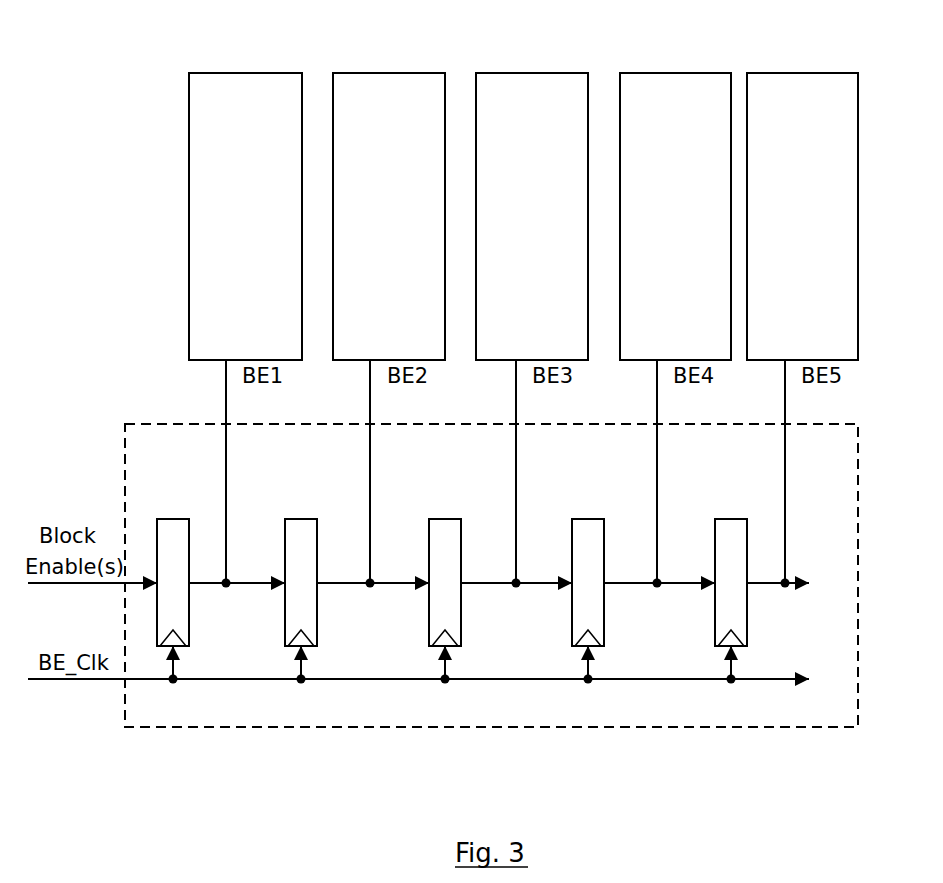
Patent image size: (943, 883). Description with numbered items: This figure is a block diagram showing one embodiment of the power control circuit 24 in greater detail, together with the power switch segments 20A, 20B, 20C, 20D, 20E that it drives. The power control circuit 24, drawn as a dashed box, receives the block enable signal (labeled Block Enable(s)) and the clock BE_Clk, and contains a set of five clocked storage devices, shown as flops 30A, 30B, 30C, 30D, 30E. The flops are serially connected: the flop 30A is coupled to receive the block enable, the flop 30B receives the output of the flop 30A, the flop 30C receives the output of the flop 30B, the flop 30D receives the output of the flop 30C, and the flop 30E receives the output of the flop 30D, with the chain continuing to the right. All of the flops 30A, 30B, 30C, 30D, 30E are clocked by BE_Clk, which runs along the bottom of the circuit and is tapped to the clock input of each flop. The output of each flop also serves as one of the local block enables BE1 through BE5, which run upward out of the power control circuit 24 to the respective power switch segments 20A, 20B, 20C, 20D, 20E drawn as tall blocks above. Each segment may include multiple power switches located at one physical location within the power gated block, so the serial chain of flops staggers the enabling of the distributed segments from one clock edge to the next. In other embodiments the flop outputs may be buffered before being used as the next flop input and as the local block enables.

The power switch segment 20A is at (245, 73).
The power switch segment 20B is at (388, 73).
The power switch segment 20C is at (532, 73).
The power switch segment 20D is at (676, 73).
The power switch segment 20E is at (802, 73).
The flop 30A is at (190, 585).
The flop 30B is at (318, 585).
The flop 30C is at (462, 585).
The flop 30D is at (605, 585).
The flop 30E is at (748, 585).
The power control circuit 24 is at (853, 716).